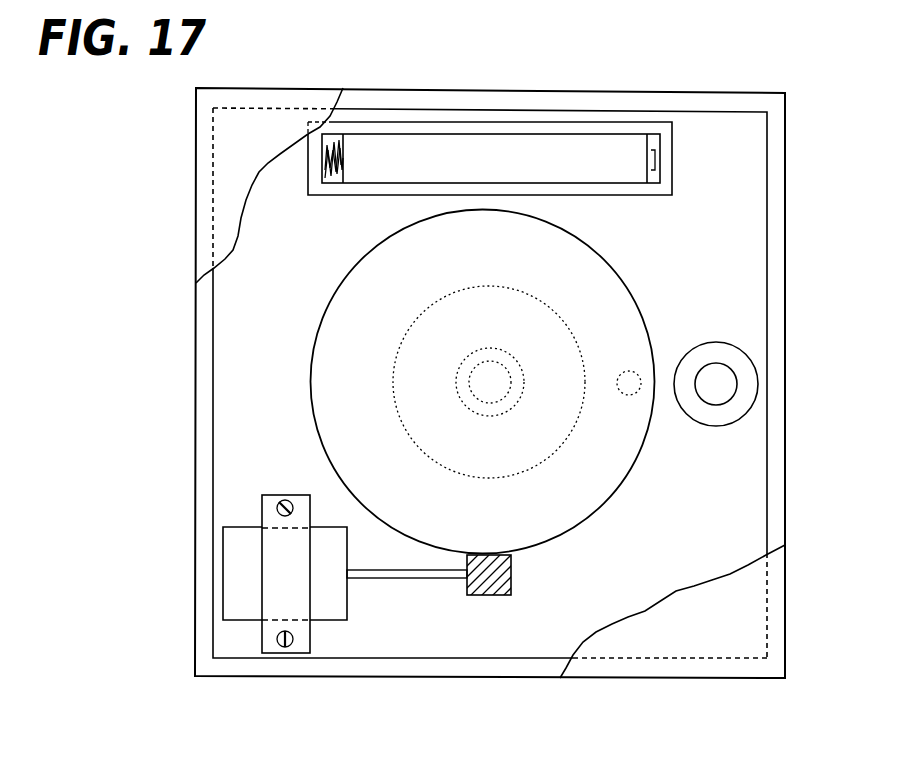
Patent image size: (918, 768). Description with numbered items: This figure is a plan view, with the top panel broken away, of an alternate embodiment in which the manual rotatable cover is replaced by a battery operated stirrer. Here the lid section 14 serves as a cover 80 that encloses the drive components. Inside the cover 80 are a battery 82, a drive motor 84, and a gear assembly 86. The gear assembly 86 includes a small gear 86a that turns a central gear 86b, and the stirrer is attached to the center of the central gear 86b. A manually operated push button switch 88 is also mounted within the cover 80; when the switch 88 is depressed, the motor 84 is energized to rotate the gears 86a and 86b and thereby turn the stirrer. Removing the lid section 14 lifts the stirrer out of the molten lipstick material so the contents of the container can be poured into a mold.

The lid section 14 is at (712, 97).
The cover 80 is at (811, 227).
The battery 82 is at (422, 148).
The drive motor 84 is at (245, 527).
The gear assembly 86 is at (398, 612).
The small gear 86a is at (512, 571).
The central gear 86b is at (612, 472).
The push button switch 88 is at (718, 373).